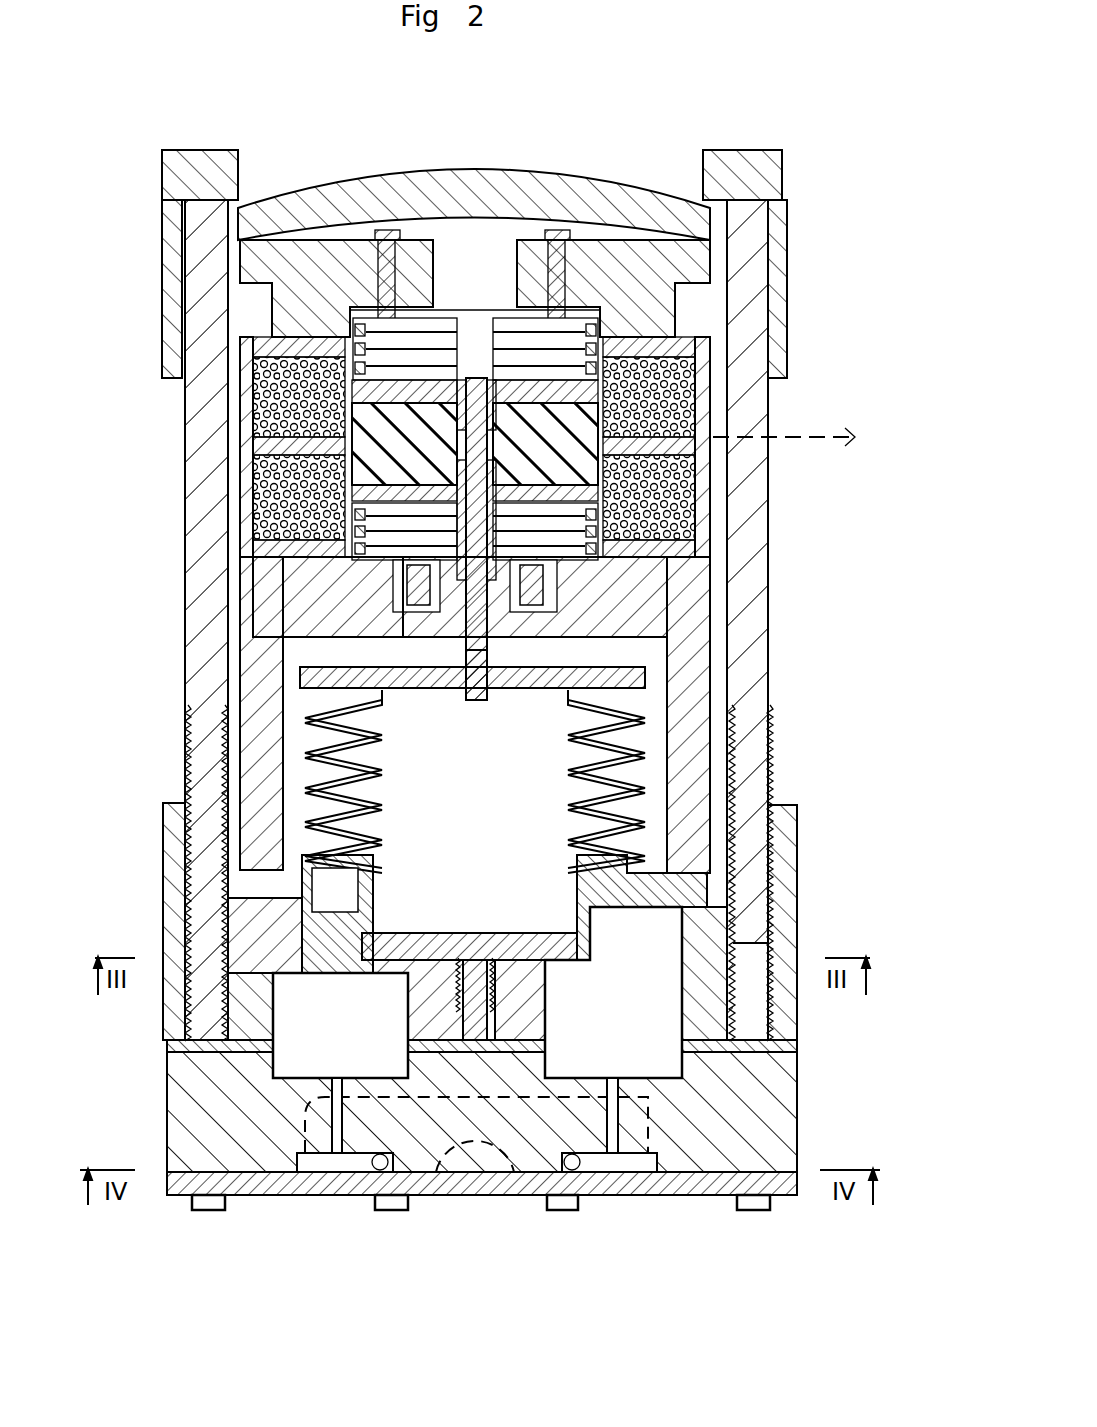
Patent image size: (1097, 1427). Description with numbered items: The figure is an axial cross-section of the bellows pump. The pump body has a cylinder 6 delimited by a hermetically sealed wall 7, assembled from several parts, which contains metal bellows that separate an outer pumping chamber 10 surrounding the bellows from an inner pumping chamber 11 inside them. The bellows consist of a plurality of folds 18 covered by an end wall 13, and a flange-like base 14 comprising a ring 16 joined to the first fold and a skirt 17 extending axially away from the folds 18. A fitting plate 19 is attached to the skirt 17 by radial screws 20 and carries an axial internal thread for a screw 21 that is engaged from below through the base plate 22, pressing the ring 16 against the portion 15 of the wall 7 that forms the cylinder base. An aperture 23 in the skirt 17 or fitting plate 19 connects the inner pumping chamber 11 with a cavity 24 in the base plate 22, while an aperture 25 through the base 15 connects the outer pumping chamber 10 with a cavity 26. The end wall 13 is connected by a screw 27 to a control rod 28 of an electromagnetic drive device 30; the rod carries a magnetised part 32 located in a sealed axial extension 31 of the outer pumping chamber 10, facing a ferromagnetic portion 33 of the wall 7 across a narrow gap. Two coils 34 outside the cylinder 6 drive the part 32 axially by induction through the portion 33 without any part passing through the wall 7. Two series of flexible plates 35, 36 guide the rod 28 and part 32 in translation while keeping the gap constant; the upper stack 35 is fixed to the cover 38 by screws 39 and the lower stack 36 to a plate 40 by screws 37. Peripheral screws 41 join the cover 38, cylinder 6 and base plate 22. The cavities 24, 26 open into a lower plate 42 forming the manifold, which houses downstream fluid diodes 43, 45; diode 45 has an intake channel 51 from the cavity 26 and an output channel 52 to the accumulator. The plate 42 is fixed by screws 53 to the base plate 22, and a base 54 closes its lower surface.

The cylinder 6 is at (690, 780).
The wall 7 is at (660, 698).
The outer pumping chamber 10 is at (625, 652).
The inner pumping chamber 11 is at (493, 780).
The end wall 13 is at (597, 680).
The base 14 is at (378, 935).
The portion of the wall forming the base of the cylinder 15 is at (770, 842).
The ring 16 is at (310, 893).
The skirt 17 is at (365, 910).
The folds 18 is at (620, 720).
The fitting plate 19 is at (455, 930).
The radial screws 20 is at (437, 933).
The screw for securing the bellows 21 is at (478, 1025).
The base plate 22 is at (760, 1018).
The aperture 23 is at (620, 870).
The cavity 24 is at (640, 935).
The aperture 25 is at (222, 777).
The cavity 26 is at (283, 975).
The screw 27 is at (462, 700).
The control rod 28 is at (470, 612).
The electromagnetic drive device 30 is at (235, 425).
The axial extension 31 is at (582, 300).
The magnetised part 32 is at (365, 455).
The ferromagnetic portion of the wall 33 is at (272, 372).
The coils 34 is at (325, 350).
The upper series of flexible plates 35 is at (522, 345).
The lower series of flexible plates 36 is at (595, 575).
The screws 37 is at (530, 582).
The cover 38 is at (330, 262).
The screws 39 is at (385, 235).
The plate 40 is at (415, 580).
The peripheral screws 41 is at (203, 641).
The lower plate 42 is at (735, 1105).
The downstream fluid diode 43 is at (603, 1160).
The downstream fluid diode 45 is at (335, 1162).
The intake channel 51 is at (310, 1115).
The output channel 52 is at (375, 1168).
The screws 53 is at (748, 1200).
The base 54 is at (652, 1170).